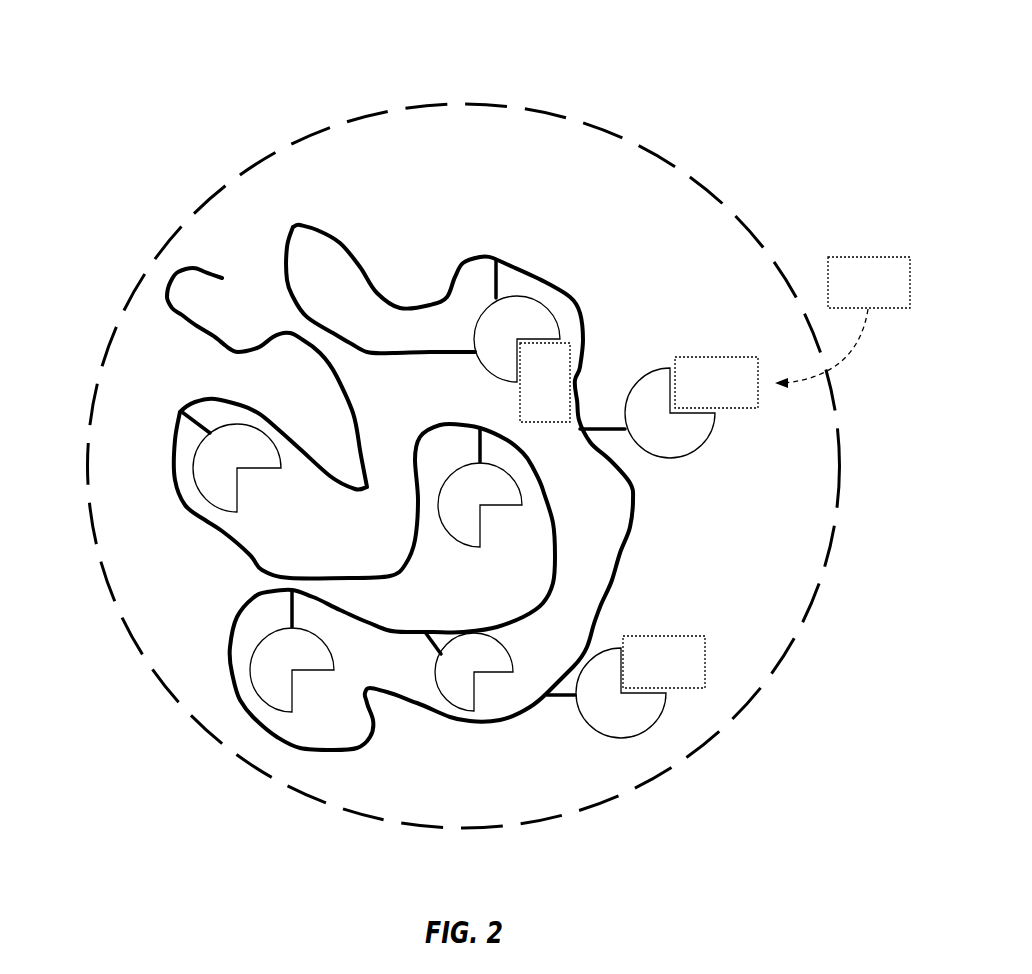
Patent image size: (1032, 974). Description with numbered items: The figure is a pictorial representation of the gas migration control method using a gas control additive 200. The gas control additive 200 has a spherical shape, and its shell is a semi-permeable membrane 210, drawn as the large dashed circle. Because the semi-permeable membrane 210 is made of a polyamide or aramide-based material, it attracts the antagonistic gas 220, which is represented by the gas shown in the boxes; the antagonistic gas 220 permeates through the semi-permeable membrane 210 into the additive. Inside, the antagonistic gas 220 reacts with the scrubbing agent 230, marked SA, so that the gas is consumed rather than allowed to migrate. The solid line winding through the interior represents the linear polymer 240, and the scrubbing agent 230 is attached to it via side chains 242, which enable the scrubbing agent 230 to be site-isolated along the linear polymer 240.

The gas control additive 200 is at (131, 66).
The semi-permeable membrane 210 is at (168, 242).
The antagonistic gas 220 is at (870, 256).
The scrubbing agent 230 is at (487, 370).
The linear polymer 240 is at (300, 225).
The side chains 242 is at (296, 618).